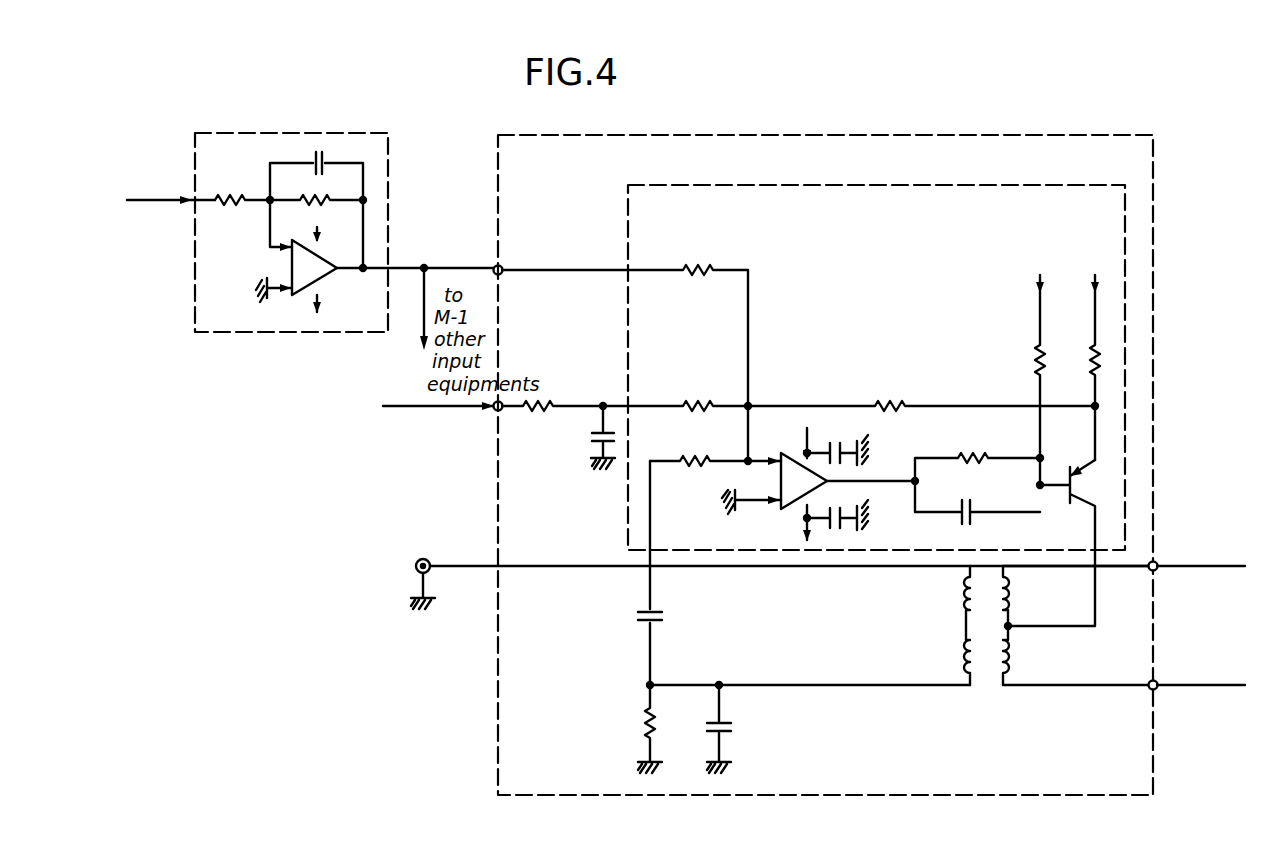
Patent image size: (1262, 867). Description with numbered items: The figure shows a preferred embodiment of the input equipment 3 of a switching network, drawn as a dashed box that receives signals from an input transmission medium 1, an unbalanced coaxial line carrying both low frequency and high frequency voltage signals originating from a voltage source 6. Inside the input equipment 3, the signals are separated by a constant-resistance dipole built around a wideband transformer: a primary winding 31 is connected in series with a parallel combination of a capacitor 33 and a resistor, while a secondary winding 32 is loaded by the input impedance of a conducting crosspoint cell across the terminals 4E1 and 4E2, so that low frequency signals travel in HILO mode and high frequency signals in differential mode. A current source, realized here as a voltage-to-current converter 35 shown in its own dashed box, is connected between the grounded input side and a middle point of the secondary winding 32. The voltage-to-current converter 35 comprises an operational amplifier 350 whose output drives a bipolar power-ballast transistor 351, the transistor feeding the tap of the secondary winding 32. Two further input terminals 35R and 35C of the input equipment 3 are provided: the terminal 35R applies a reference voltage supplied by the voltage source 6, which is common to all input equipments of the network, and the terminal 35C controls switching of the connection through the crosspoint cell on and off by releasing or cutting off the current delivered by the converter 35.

The voltage source 6 is at (241, 333).
The input terminal 35R is at (495, 266).
The input terminal 35C is at (494, 411).
The input equipment 3 is at (960, 158).
The voltage-to-current converter 35 is at (836, 286).
The operational amplifier 350 is at (782, 509).
The bipolar power-ballast transistor 351 is at (1075, 486).
The primary winding 31 is at (957, 650).
The secondary winding 32 is at (1020, 598).
The capacitor 33 is at (737, 727).
The input transmission medium 1 is at (416, 560).
The terminal of crosspoint cell 4E1 is at (1157, 562).
The terminal of crosspoint cell 4E2 is at (1155, 690).